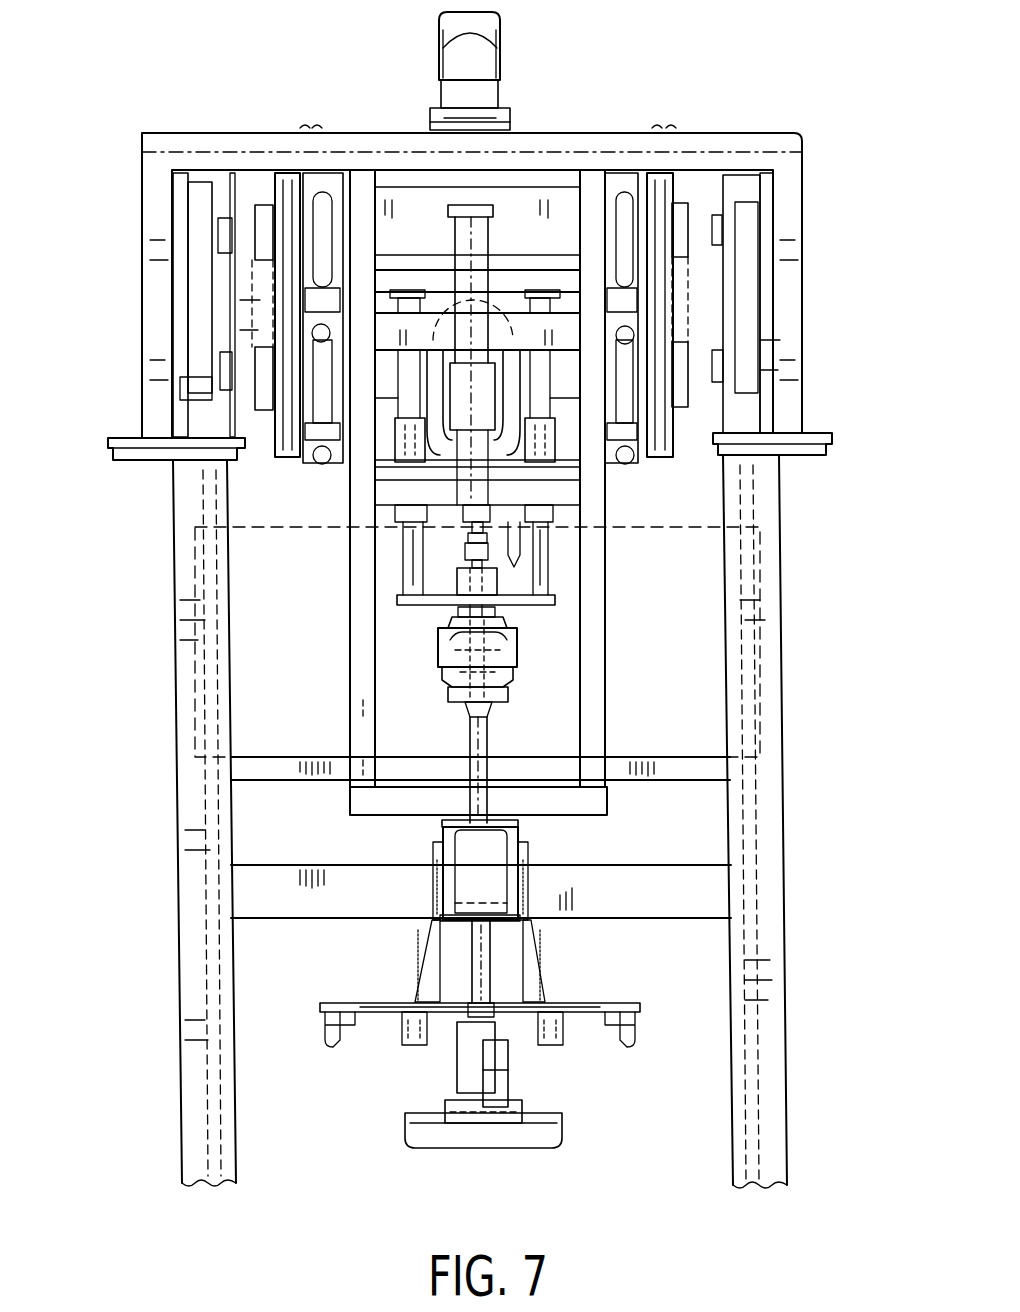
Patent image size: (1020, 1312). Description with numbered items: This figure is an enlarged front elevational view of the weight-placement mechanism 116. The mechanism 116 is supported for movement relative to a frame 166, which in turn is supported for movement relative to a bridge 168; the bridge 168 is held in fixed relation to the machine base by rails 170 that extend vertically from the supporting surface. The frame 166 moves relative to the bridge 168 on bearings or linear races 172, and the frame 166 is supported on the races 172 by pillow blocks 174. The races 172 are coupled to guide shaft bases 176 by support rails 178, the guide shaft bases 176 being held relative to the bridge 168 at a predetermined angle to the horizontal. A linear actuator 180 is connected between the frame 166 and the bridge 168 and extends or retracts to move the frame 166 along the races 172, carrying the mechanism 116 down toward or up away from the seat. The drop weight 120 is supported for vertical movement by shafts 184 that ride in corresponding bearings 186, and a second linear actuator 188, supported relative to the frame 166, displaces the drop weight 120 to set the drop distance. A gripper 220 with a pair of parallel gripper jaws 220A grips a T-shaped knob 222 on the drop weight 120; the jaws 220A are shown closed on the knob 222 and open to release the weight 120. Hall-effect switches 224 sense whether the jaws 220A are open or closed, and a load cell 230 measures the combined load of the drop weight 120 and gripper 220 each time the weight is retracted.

The weight-placement mechanism 116 is at (712, 605).
The drop weight 120 is at (606, 888).
The frame 166 is at (605, 735).
The bridge 168 is at (803, 310).
The rails 170 is at (787, 1030).
The bearings or linear races 172 is at (326, 480).
The pillow blocks 174 is at (320, 292).
The guide shaft bases 176 is at (293, 193).
The support rails 178 is at (240, 298).
The linear actuator 180 is at (500, 80).
The shafts 184 is at (540, 540).
The bearings 186 is at (425, 508).
The linear actuator 188 is at (477, 243).
The gripper 220 is at (423, 710).
The gripper jaws 220A is at (495, 700).
The knob 222 is at (493, 700).
The switches 224 is at (437, 647).
The load cell 230 is at (452, 583).